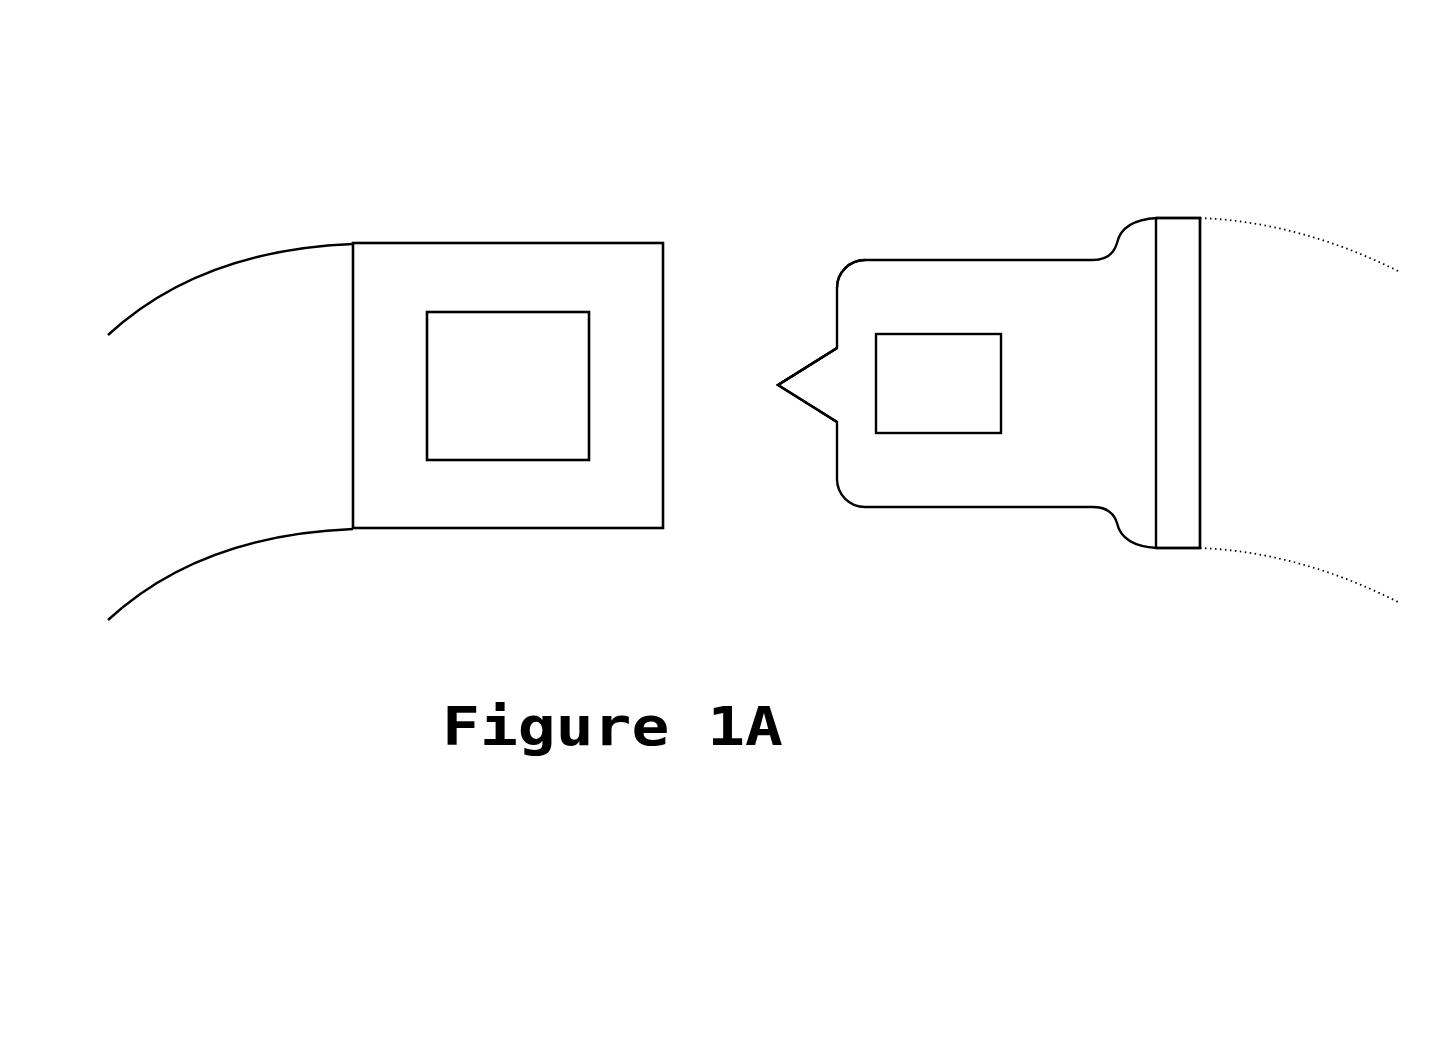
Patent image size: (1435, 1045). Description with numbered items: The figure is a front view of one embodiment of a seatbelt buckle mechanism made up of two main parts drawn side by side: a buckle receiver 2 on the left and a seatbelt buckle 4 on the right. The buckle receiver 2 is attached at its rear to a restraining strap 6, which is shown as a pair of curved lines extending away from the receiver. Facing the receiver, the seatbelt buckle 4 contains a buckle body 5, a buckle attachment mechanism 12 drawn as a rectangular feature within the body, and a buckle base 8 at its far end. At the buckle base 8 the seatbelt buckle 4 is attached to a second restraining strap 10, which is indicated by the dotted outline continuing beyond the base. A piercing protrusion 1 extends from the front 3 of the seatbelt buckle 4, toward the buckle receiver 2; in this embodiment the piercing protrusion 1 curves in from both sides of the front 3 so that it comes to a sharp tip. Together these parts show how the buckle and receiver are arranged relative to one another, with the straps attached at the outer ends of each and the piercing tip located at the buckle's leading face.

The piercing protrusion 1 is at (779, 379).
The buckle receiver 2 is at (530, 243).
The front 3 is at (821, 348).
The seatbelt buckle 4 is at (813, 261).
The buckle body 5 is at (951, 258).
The restraining strap 6 is at (256, 239).
The buckle base 8 is at (1146, 211).
The restraining strap 10 is at (1269, 581).
The buckle attachment mechanism 12 is at (893, 434).